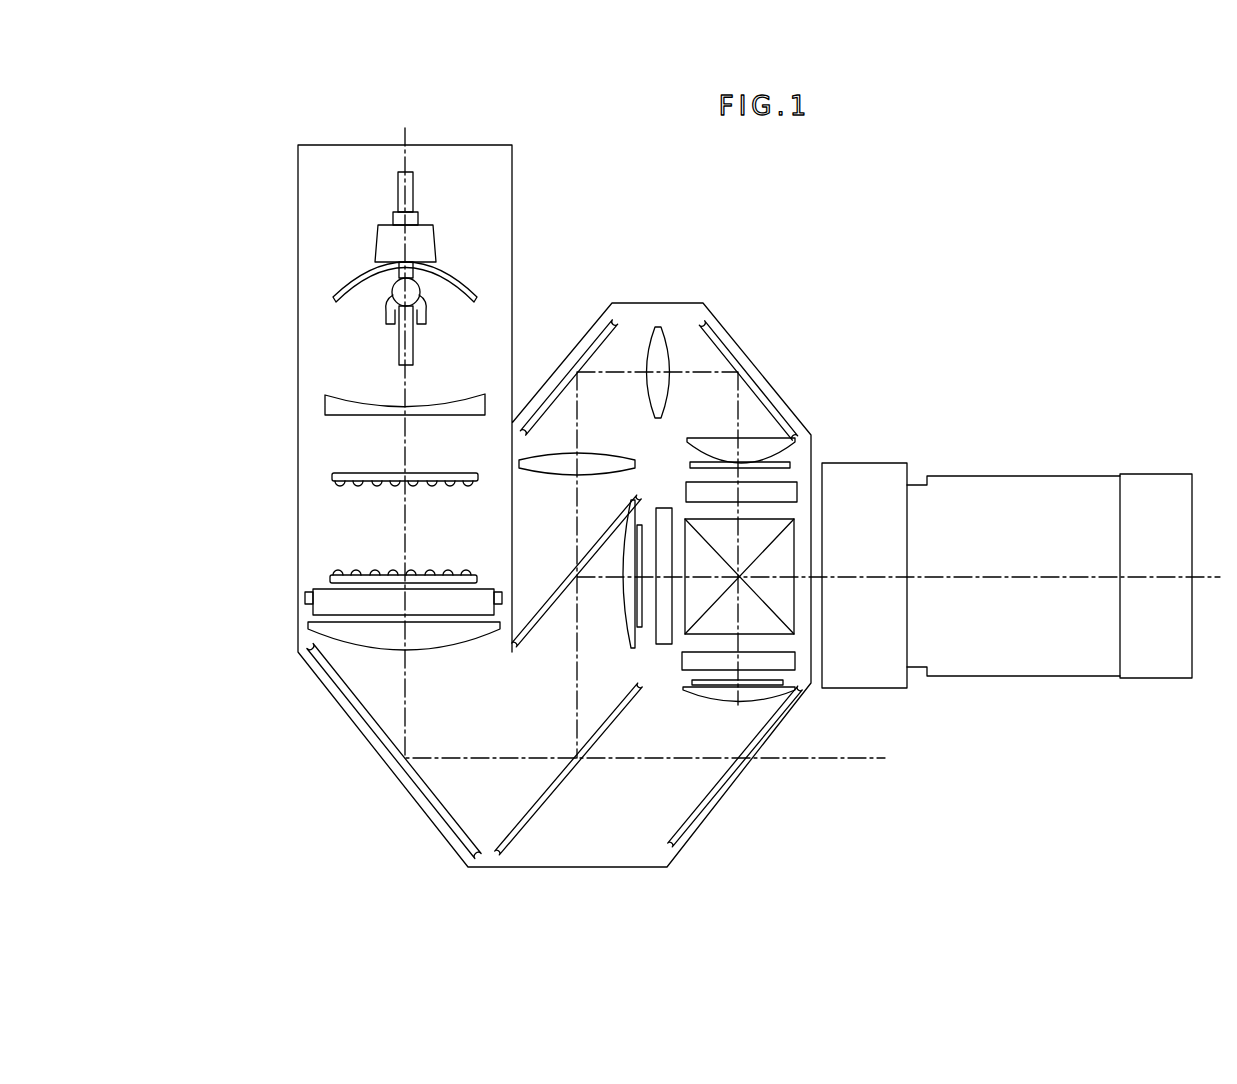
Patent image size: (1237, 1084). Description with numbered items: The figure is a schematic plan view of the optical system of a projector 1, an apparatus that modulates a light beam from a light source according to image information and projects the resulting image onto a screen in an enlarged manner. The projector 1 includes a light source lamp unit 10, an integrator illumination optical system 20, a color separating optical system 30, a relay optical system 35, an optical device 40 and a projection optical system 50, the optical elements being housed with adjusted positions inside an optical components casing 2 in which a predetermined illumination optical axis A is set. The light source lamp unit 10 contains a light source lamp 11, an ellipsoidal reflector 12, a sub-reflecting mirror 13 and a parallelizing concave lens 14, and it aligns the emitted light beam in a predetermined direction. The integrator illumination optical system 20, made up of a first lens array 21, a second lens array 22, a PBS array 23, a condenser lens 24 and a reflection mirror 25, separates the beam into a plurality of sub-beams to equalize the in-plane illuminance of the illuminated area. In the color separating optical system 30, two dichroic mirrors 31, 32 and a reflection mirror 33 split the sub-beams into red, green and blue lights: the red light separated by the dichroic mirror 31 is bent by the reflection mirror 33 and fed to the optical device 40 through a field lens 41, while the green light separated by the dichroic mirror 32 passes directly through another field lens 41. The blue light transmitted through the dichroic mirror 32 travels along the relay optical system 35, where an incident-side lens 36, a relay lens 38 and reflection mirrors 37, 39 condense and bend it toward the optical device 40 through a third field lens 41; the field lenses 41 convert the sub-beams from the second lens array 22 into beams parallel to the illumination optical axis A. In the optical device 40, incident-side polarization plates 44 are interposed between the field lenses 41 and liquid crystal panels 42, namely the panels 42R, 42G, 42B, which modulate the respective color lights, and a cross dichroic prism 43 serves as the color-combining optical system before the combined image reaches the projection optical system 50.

The projector 1 is at (1012, 286).
The optical components casing 2 is at (765, 370).
The light source lamp unit 10 is at (338, 250).
The light source lamp 11 is at (392, 289).
The ellipsoidal reflector 12 is at (333, 297).
The sub-reflecting mirror 13 is at (384, 318).
The parallelizing concave lens 14 is at (325, 400).
The integrator illumination optical system 20 is at (355, 524).
The first lens array 21 is at (333, 477).
The second lens array 22 is at (330, 577).
The PBS array 23 is at (313, 607).
The condenser lens 24 is at (310, 625).
The reflection mirror 25 is at (380, 745).
The color separating optical system 30 is at (608, 812).
The dichroic mirror 31 is at (537, 818).
The dichroic mirror 32 is at (534, 636).
The reflection mirror 33 is at (717, 798).
The relay optical system 35 is at (680, 340).
The incident-side lens 36 is at (562, 453).
The reflection mirror 37 is at (600, 332).
The relay lens 38 is at (657, 327).
The reflection mirror 39 is at (718, 335).
The optical device 40 is at (797, 680).
The field lens 41 is at (717, 442).
The liquid crystal panel 42 is at (787, 573).
The liquid crystal panel 42G is at (662, 508).
The liquid crystal panel 42B is at (798, 482).
The liquid crystal panel 42R is at (797, 658).
The cross dichroic prism 43 is at (790, 538).
The incident-side polarization plate 44 is at (790, 462).
The projection optical system 50 is at (1042, 442).
The illumination optical axis A is at (496, 757).